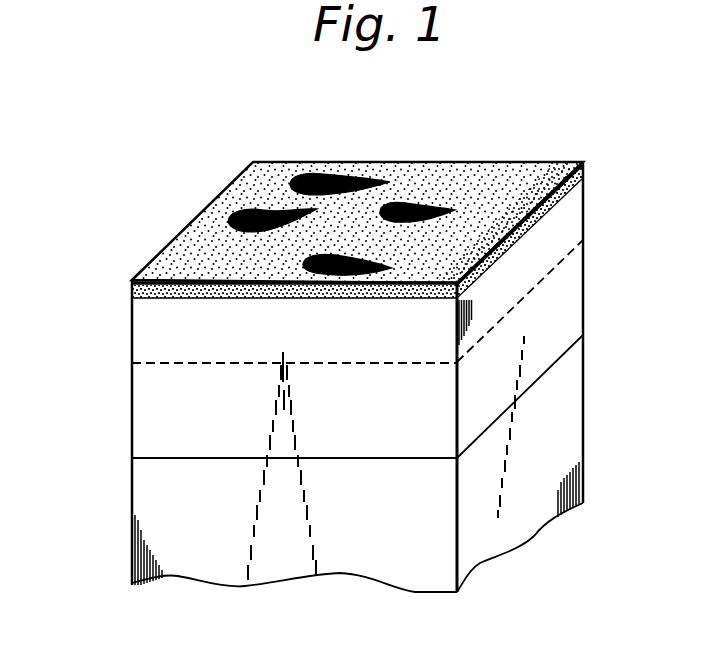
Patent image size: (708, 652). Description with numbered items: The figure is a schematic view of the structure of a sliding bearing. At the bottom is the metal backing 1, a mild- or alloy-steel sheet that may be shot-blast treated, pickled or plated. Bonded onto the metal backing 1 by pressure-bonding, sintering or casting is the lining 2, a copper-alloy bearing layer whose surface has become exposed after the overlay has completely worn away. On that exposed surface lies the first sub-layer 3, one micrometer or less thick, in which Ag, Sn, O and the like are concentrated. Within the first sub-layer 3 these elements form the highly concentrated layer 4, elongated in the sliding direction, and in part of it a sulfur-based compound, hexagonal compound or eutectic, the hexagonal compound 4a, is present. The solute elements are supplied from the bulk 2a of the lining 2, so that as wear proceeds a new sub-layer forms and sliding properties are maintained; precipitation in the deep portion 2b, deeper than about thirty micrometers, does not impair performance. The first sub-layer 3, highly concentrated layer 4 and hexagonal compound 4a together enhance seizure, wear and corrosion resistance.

The metal backing 1 is at (160, 535).
The lining 2 is at (126, 386).
The bulk 2a is at (165, 326).
The deep portion 2b is at (420, 407).
The first sub-layer 3 is at (132, 290).
The highly concentrated layer 4 is at (330, 176).
The hexagonal compound 4a is at (247, 213).